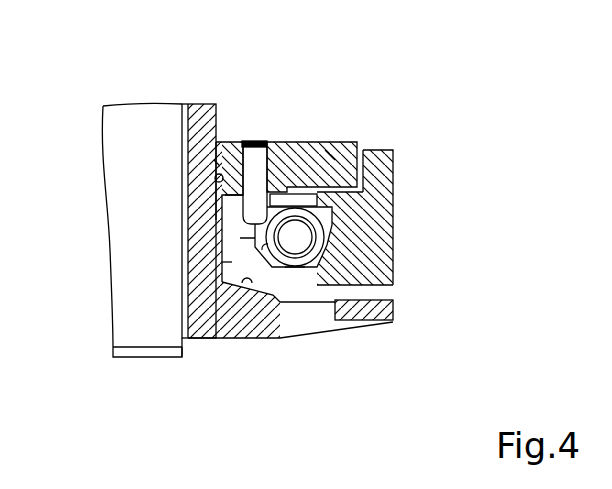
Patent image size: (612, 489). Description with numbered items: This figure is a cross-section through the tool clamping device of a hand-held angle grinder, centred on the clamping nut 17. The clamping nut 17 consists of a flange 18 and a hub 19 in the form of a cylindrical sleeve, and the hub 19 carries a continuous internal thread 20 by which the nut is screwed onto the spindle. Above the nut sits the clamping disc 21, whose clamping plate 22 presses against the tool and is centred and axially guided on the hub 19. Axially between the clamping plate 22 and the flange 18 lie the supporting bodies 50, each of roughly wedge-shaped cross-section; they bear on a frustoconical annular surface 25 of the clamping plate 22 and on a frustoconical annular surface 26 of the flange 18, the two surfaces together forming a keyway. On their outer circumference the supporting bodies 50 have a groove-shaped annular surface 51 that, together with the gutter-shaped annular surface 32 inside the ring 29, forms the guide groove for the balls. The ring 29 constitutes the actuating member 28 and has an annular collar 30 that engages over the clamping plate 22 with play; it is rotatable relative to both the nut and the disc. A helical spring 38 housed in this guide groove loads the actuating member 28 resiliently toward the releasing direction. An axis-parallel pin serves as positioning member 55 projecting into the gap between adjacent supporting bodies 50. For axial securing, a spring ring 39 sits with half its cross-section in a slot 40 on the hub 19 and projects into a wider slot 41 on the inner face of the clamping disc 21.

The clamping nut 17 is at (408, 323).
The flange 18 is at (264, 334).
The hub 19 is at (201, 120).
The internal thread 20 is at (183, 310).
The clamping disc 21 is at (301, 142).
The clamping plate 22 is at (331, 160).
The annular surface 25 is at (222, 223).
The annular surface 26 is at (242, 283).
The actuating member 28 is at (393, 262).
The ring 29 is at (377, 281).
The annular collar 30 is at (392, 163).
The annular surface 32 is at (328, 224).
The helical spring 38 is at (303, 262).
The spring ring 39 is at (213, 160).
The slot 40 is at (216, 180).
The slot 41 is at (226, 145).
The supporting body 50 is at (240, 243).
The annular surface 51 is at (232, 270).
The positioning member 55 is at (256, 141).